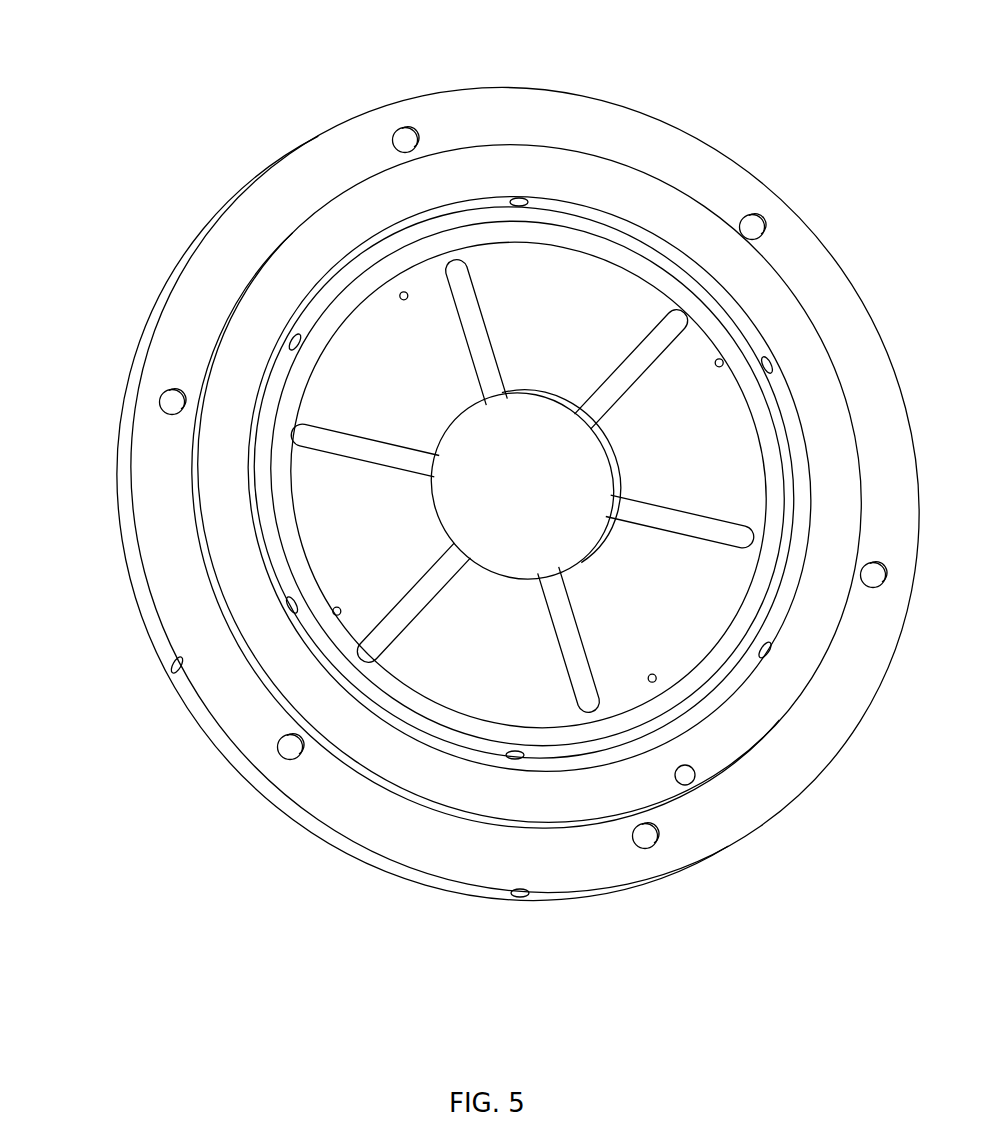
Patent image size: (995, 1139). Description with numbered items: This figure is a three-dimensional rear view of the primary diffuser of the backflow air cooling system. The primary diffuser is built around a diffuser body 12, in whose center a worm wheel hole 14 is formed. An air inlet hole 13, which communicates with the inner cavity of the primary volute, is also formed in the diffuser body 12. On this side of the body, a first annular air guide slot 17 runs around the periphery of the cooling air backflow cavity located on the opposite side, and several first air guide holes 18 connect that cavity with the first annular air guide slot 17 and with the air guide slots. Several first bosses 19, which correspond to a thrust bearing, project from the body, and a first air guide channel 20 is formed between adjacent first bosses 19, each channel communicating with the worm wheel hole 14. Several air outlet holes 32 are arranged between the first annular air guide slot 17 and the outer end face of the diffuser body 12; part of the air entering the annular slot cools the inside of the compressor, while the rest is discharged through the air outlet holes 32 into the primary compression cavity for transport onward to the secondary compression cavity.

The diffuser body 12 is at (313, 137).
The air inlet hole 13 is at (688, 777).
The worm wheel hole 14 is at (572, 502).
The first annular air guide slot 17 is at (343, 270).
The first air guide hole 18 is at (297, 345).
The first boss 19 is at (558, 355).
The first air guide channel 20 is at (620, 380).
The air outlet hole 32 is at (518, 200).